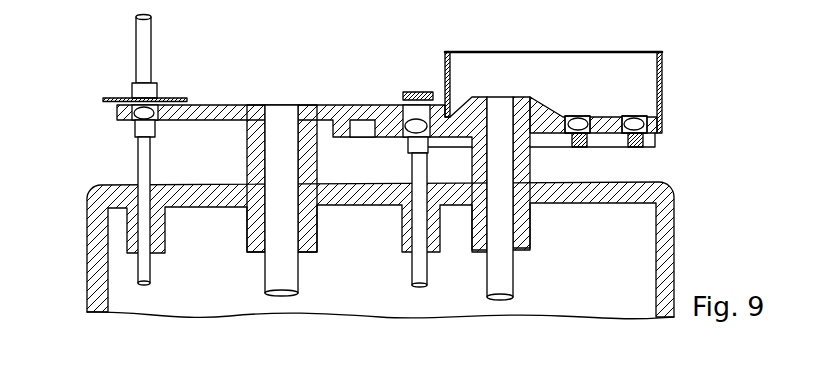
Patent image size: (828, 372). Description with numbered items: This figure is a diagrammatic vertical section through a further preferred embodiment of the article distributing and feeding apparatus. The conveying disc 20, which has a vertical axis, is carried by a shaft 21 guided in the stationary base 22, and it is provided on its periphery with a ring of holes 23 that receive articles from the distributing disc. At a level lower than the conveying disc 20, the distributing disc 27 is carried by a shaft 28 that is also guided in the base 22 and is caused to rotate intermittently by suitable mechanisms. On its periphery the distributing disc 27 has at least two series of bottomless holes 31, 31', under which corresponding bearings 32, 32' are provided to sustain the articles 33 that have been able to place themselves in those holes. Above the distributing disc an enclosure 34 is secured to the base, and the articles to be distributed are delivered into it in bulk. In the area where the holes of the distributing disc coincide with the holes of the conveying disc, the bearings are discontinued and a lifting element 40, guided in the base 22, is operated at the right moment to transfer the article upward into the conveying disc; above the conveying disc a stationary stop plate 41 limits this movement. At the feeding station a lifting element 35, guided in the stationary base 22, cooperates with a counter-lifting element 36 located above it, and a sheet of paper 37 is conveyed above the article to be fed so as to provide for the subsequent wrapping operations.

The conveying disc 20 is at (232, 104).
The shaft 21 is at (290, 270).
The stationary base 22 is at (383, 199).
The ring of holes 23 is at (418, 107).
The distributing disc 27 is at (664, 128).
The shaft 28 is at (508, 273).
The hole 31 is at (567, 94).
The hole 31' is at (630, 94).
The bearing 32 is at (601, 153).
The bearing 32' is at (659, 149).
The article 33 is at (136, 113).
The enclosure 34 is at (663, 55).
The lifting element 35 is at (148, 152).
The counter-lifting element 36 is at (144, 32).
The sheet of paper 37 is at (170, 98).
The lifting element 40 is at (421, 266).
The stationary stop plate 41 is at (403, 92).